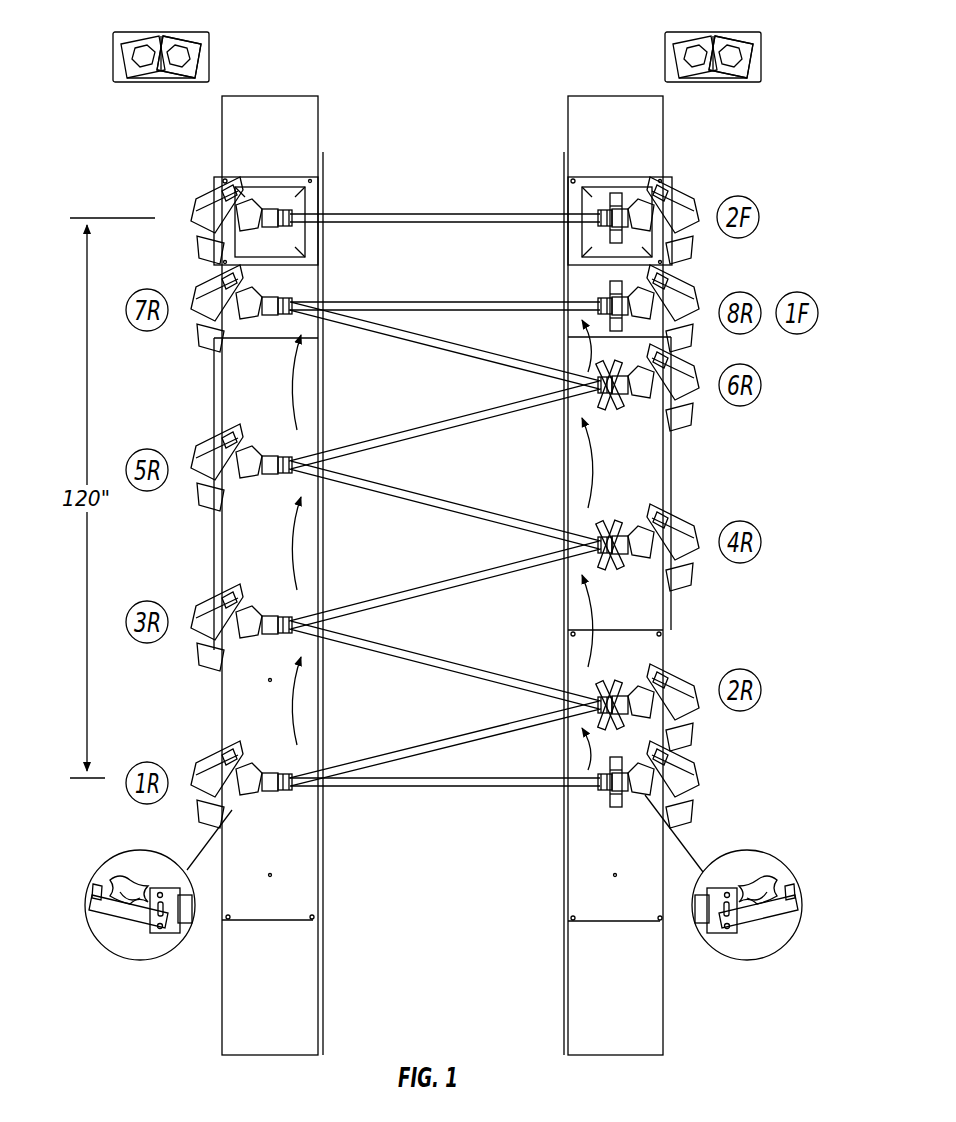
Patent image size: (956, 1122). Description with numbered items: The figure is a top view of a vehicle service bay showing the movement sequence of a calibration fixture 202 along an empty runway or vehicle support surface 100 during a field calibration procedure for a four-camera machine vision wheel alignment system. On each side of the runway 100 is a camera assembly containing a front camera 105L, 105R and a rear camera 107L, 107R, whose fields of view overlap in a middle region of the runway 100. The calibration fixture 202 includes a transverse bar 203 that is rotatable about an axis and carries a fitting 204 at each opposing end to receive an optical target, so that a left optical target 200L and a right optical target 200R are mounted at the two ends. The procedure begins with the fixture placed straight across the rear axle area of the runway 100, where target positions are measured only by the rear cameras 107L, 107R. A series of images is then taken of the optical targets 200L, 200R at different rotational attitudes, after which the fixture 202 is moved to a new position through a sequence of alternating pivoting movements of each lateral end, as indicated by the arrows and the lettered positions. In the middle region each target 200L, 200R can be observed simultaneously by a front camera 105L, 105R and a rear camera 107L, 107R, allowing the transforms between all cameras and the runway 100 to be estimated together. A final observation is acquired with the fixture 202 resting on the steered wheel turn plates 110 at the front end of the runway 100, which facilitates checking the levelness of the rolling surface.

The vehicle support surface 100 is at (322, 106).
The left front camera 105L is at (188, 35).
The right front camera 105R is at (740, 35).
The left rear camera 107L is at (133, 35).
The right rear camera 107R is at (688, 35).
The steered wheel turn plates 110 is at (292, 206).
The left optical target 200L is at (205, 757).
The right optical target 200R is at (684, 760).
The calibration fixture 202 is at (420, 800).
The transverse bar 203 is at (470, 790).
The fitting 204 is at (163, 937).